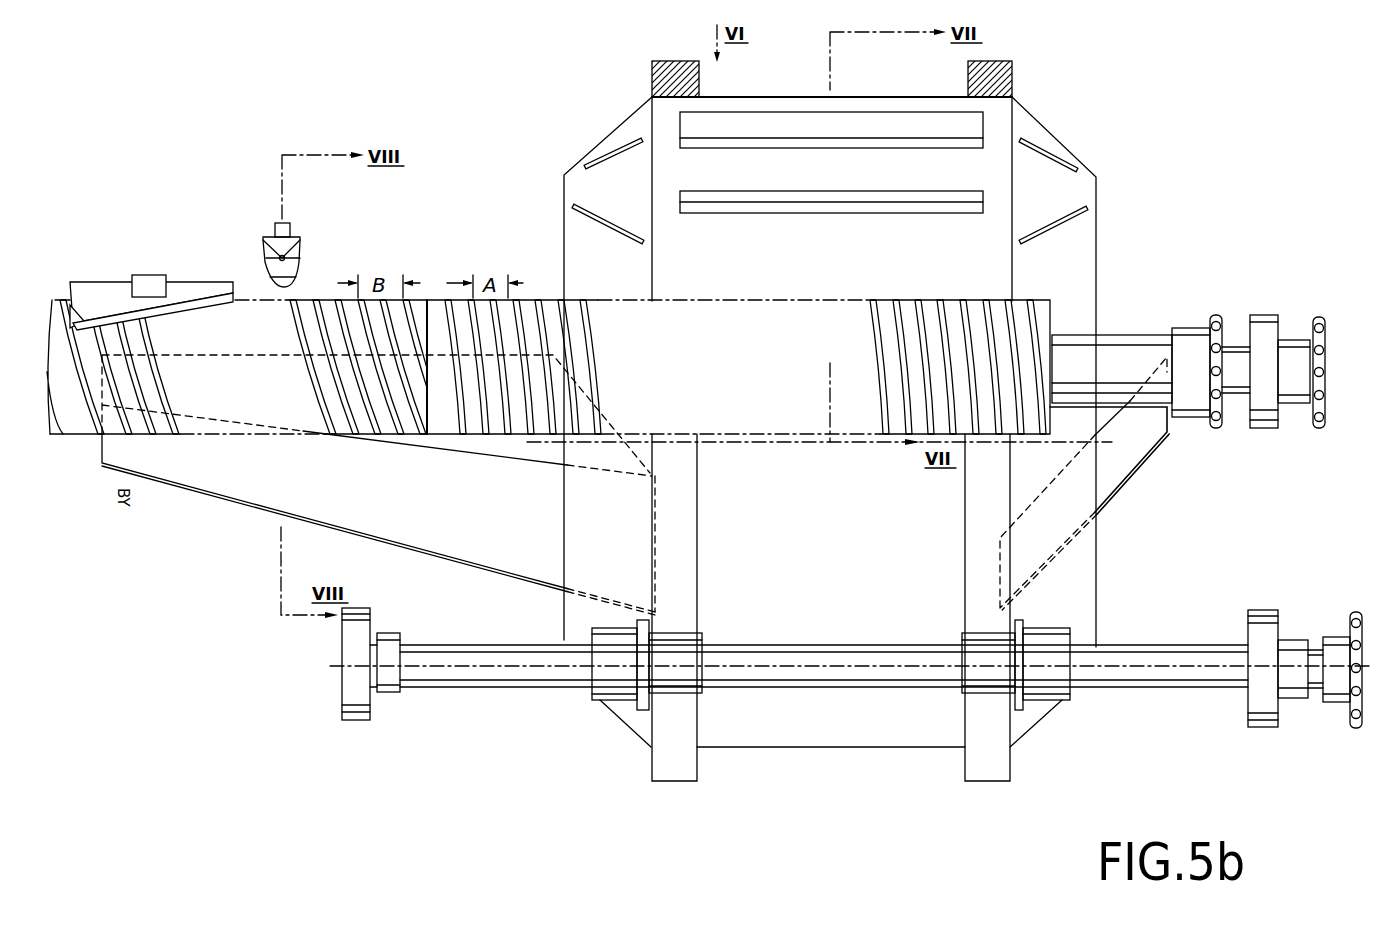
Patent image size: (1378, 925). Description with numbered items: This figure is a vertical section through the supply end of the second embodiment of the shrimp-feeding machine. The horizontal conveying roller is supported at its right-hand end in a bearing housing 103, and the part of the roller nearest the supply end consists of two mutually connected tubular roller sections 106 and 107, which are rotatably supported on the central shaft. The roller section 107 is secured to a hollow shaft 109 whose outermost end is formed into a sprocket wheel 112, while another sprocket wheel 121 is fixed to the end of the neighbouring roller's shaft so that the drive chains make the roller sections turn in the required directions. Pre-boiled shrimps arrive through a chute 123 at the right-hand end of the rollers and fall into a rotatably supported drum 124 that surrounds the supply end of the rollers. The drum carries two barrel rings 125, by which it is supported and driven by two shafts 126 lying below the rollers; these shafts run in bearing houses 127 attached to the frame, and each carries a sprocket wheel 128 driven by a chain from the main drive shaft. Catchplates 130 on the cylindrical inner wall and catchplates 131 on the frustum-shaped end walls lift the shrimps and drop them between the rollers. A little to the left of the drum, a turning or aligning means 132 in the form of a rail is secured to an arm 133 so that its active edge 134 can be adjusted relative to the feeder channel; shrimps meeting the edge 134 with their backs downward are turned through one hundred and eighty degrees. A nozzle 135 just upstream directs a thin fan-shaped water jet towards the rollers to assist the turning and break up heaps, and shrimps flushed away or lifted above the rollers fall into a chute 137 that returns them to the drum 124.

The bearing housing 103 is at (1265, 332).
The tubular roller section 106 is at (242, 410).
The tubular roller section 107 is at (835, 418).
The hollow shaft 109 is at (1128, 355).
The sprocket wheel 112 is at (1218, 430).
The sprocket wheel 121 is at (1316, 430).
The chute 123 is at (1122, 468).
The drum 124 is at (882, 742).
The barrel ring 125 is at (697, 78).
The shaft 126 is at (1130, 676).
The bearing house 127 is at (355, 712).
The sprocket wheel 128 is at (1337, 690).
The catchplate 130 is at (876, 125).
The catchplate 131 is at (612, 156).
The turning or aligning means 132 is at (86, 290).
The arm 133 is at (147, 284).
The active edge 134 is at (200, 300).
The nozzle 135 is at (292, 248).
The chute 137 is at (183, 478).